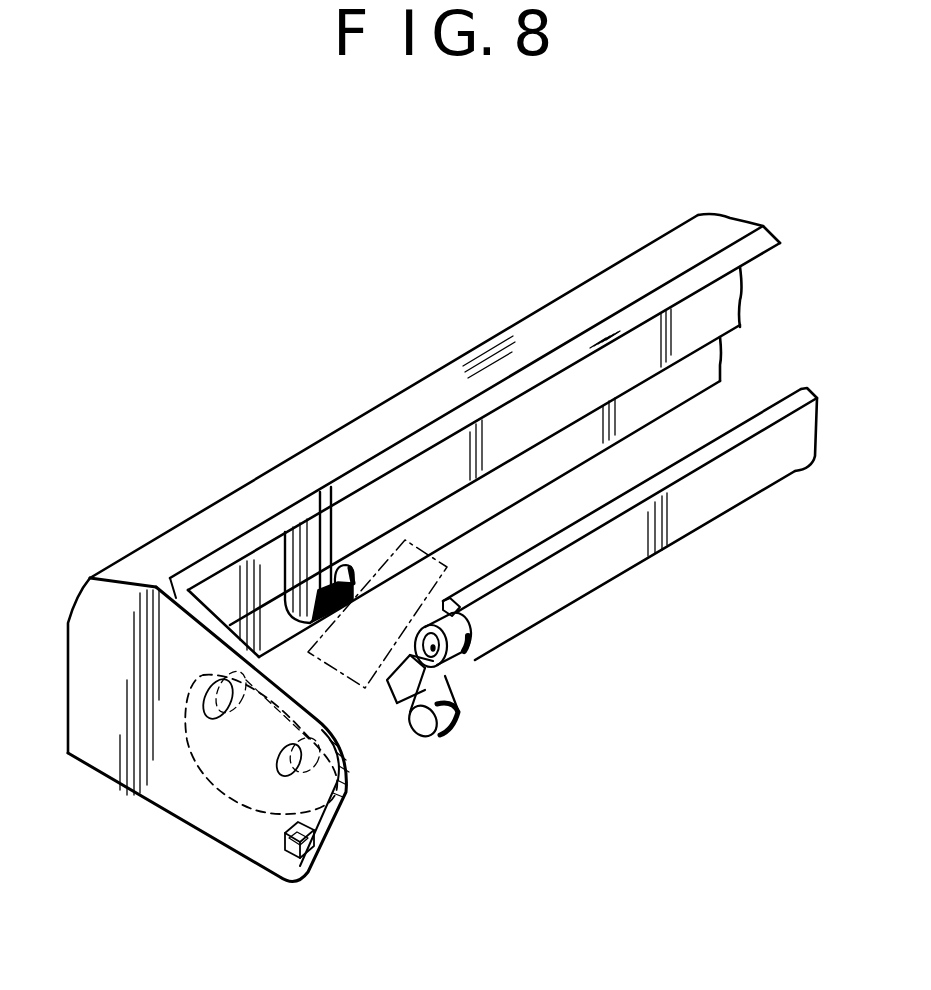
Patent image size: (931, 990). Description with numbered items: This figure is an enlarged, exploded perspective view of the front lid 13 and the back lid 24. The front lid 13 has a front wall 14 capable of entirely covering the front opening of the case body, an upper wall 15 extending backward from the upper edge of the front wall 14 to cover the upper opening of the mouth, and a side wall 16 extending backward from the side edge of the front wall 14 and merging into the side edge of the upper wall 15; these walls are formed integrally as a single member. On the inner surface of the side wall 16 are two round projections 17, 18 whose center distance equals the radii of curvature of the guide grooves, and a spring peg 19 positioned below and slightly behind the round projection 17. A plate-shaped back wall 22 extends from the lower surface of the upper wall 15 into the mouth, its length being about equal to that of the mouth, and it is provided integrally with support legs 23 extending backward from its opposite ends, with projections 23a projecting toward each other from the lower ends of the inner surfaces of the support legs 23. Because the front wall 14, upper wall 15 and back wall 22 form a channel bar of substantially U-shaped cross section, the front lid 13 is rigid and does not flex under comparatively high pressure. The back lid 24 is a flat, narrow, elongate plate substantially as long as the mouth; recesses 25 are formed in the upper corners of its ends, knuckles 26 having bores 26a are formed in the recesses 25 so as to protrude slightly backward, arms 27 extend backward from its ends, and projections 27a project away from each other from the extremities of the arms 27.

The front lid 13 is at (415, 549).
The front wall 14 is at (224, 524).
The upper wall 15 is at (426, 406).
The side wall 16 is at (113, 619).
The round projection 17 is at (349, 798).
The round projection 18 is at (245, 763).
The spring peg 19 is at (336, 853).
The back wall 22 is at (524, 420).
The support leg 23 is at (302, 612).
The projection 23a is at (343, 568).
The back lid 24 is at (718, 497).
The recess 25 is at (405, 665).
The knuckle 26 is at (463, 620).
The bore 26a is at (458, 657).
The arm 27 is at (452, 690).
The projection 27a is at (442, 730).